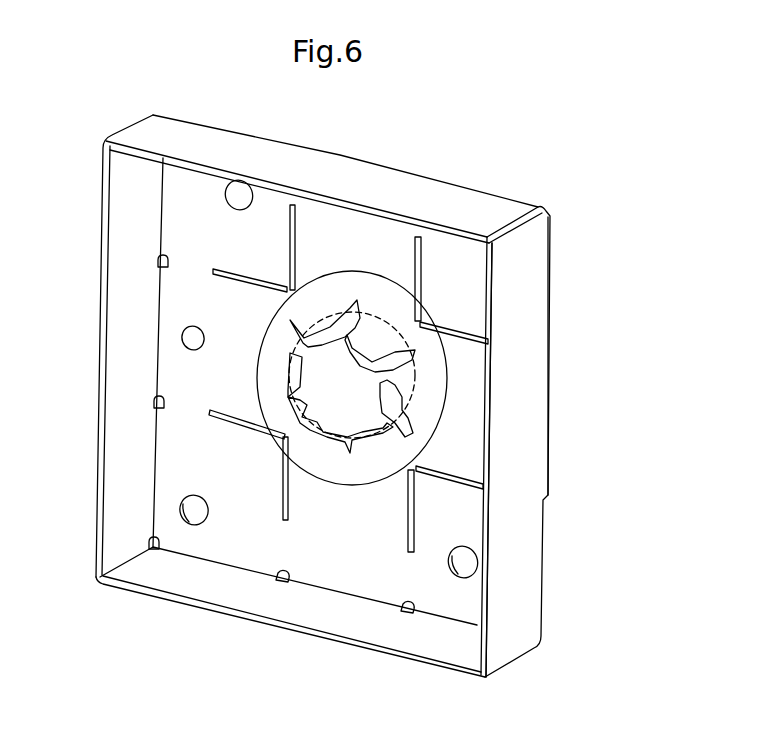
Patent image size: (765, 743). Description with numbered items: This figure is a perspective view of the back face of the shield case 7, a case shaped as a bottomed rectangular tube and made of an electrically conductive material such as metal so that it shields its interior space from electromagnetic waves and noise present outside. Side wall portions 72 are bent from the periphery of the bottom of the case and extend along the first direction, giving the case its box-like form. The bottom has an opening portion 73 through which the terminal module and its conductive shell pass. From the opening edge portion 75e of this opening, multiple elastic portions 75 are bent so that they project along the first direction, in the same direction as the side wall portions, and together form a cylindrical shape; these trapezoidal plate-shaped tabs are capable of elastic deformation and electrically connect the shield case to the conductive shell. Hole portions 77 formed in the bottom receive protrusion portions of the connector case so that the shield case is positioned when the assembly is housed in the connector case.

The shield case 7 is at (489, 147).
The side wall portion 72 is at (508, 427).
The opening portion 73 is at (340, 382).
The elastic portion 75 is at (320, 323).
The opening edge portion 75e is at (386, 375).
The hole portion 77 is at (193, 524).